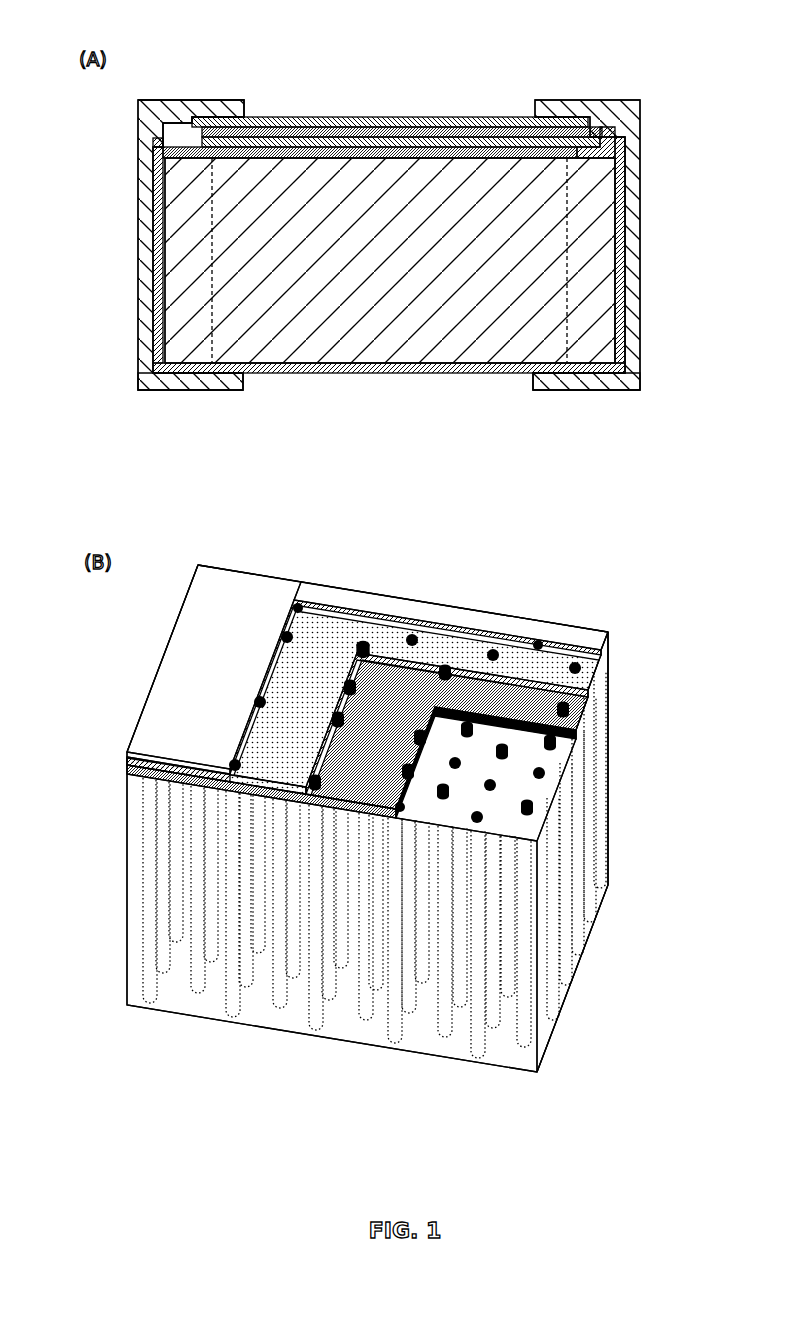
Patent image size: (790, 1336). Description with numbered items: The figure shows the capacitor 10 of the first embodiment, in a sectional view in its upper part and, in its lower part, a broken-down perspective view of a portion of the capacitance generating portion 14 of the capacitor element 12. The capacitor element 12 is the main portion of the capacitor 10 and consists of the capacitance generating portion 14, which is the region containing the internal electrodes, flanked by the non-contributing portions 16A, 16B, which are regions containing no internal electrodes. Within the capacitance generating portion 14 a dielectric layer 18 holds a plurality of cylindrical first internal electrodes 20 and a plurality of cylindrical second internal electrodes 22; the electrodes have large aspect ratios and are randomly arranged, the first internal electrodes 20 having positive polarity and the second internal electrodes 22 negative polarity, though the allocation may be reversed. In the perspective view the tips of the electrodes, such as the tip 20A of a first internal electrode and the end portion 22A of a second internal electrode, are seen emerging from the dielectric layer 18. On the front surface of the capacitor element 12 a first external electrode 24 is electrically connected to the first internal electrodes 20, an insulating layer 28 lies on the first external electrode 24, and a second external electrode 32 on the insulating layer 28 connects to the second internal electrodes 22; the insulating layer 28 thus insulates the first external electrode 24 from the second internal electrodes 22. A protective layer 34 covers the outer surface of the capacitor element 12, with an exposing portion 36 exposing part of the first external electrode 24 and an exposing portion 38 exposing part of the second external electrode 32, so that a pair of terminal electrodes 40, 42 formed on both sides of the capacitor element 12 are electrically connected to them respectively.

The capacitor 10 is at (624, 96).
The capacitor element 12 is at (513, 386).
The capacitance generating portion 14 is at (427, 352).
The non-contributing portion 16A is at (190, 358).
The non-contributing portion 16B is at (585, 360).
The dielectric layer 18 is at (613, 703).
The first internal electrodes 20 is at (548, 967).
The pillar tip 20A is at (540, 771).
The second internal electrodes 22 is at (388, 657).
The electrode layer end portion 22A is at (364, 645).
The first external electrode 24 is at (423, 155).
The insulating layer 28 is at (498, 142).
The second external electrode 32 is at (523, 132).
The protective layer 34 is at (447, 117).
The exposing portion 36 is at (188, 140).
The exposing portion 38 is at (606, 130).
The terminal electrode 40 is at (195, 100).
The terminal electrode 42 is at (637, 243).